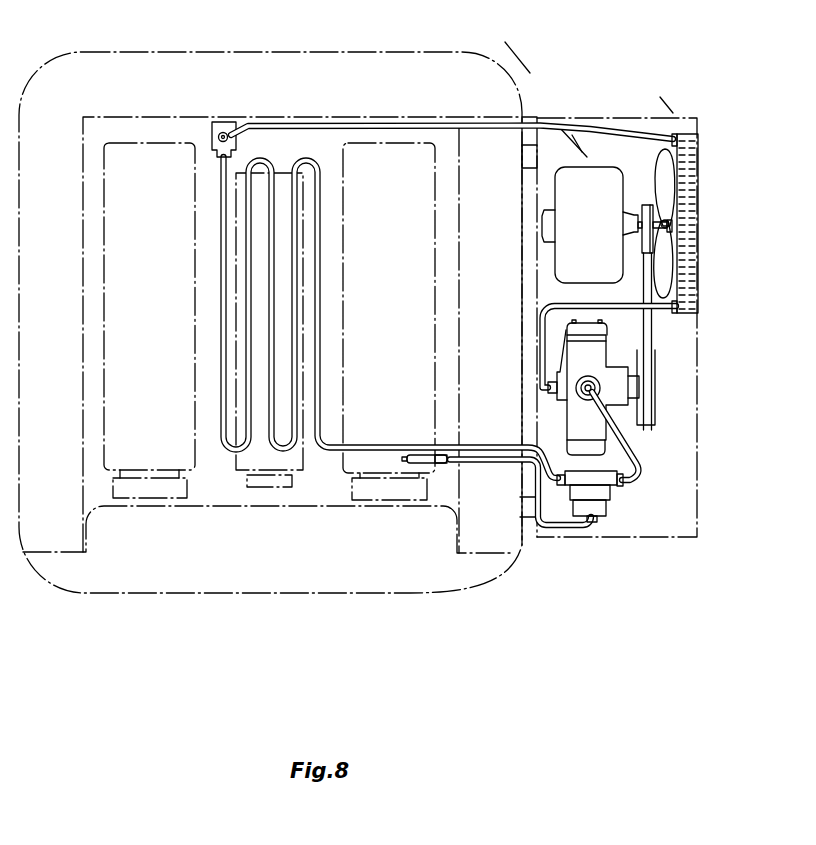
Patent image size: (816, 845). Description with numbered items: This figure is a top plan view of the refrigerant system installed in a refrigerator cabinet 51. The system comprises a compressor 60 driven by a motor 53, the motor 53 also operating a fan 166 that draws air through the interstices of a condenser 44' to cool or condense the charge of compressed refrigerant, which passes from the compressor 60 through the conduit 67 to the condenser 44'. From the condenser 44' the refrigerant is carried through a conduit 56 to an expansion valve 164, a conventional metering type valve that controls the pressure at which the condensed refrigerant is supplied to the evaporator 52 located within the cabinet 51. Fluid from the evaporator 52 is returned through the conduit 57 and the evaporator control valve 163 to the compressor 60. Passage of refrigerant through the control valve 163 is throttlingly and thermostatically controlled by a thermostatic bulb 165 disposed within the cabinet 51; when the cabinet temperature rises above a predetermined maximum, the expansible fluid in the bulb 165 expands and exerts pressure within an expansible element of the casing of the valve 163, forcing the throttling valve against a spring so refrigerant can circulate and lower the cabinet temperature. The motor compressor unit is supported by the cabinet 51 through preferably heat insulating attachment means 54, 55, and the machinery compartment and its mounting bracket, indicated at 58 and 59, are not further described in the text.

The refrigerator cabinet 51 is at (331, 62).
The evaporator 52 is at (220, 295).
The motor 53 is at (568, 258).
The heat insulating attachment means 54 is at (527, 517).
The heat insulating attachment means 55 is at (527, 158).
The conduit 56 is at (610, 128).
The conduit 57 is at (487, 443).
The machinery compartment 58 is at (697, 484).
The mounting bracket 59 is at (647, 332).
The compressor 60 is at (577, 357).
The conduit 67 is at (658, 308).
The condenser 44' is at (716, 223).
The evaporator control valve 163 is at (603, 502).
The expansion valve 164 is at (228, 134).
The thermostatic bulb 165 is at (422, 462).
The fan 166 is at (663, 168).